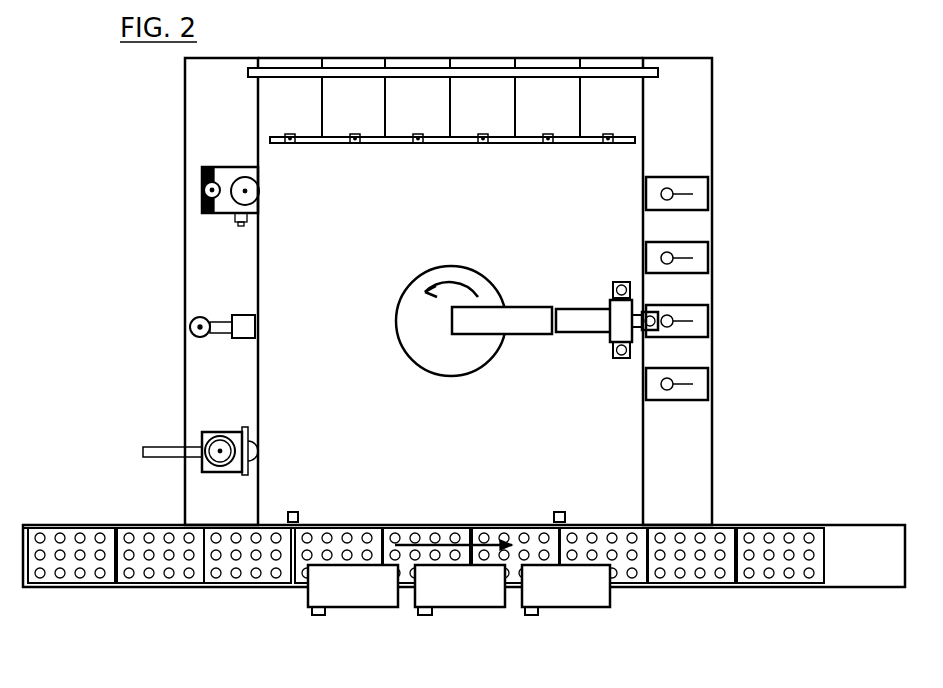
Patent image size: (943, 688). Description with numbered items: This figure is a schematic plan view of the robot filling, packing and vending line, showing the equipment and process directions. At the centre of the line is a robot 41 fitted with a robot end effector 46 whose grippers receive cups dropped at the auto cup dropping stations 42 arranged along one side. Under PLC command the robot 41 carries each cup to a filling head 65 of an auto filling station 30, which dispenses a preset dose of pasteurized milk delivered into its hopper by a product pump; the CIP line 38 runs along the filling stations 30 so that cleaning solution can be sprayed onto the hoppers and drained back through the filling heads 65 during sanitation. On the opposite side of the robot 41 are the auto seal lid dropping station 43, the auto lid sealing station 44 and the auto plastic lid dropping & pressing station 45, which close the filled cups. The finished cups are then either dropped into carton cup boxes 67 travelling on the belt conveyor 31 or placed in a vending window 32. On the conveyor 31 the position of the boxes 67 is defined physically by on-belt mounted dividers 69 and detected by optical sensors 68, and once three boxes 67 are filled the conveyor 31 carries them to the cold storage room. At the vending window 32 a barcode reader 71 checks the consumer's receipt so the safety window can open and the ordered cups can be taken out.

The auto filling station 30 is at (322, 123).
The belt conveyor 31 is at (288, 515).
The vending window 32 is at (543, 588).
The CIP line 38 is at (517, 80).
The robot 41 is at (577, 333).
The auto cup dropping station 42 is at (695, 210).
The auto seal lid dropping station 43 is at (202, 190).
The auto lid sealing station 44 is at (190, 325).
The auto plastic lid dropping & pressing station 45 is at (202, 443).
The robot end effector 46 is at (660, 332).
The filling head 65 is at (295, 143).
The carton cup box 67 is at (205, 587).
The optical sensor 68 is at (298, 517).
The on-belt mounted divider 69 is at (558, 547).
The barcode reader 71 is at (528, 613).